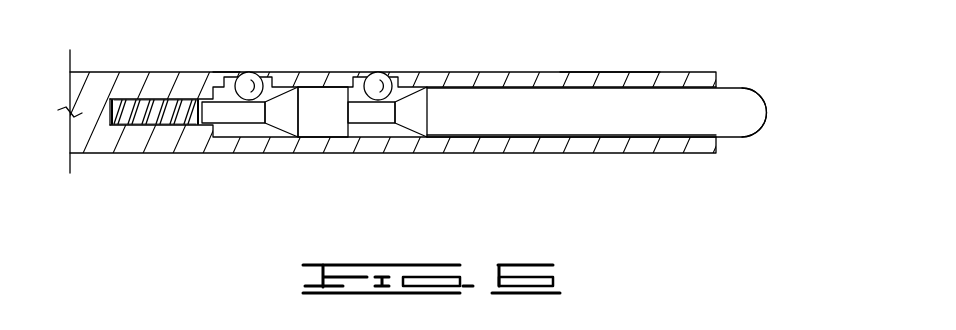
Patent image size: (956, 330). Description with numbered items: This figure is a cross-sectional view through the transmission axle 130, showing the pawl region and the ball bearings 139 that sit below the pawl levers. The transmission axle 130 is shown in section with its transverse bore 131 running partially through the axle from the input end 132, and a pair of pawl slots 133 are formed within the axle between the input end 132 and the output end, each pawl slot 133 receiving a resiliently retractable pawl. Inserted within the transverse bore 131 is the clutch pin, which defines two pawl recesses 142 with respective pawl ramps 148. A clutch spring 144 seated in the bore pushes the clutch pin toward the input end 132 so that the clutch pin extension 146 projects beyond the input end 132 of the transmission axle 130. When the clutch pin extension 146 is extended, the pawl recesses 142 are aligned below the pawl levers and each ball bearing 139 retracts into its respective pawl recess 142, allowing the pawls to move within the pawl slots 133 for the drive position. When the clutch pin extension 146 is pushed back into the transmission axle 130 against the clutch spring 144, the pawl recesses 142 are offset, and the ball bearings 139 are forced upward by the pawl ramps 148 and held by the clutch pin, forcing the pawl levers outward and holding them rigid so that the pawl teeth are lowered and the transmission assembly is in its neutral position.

The transmission axle 130 is at (542, 148).
The transverse bore 131 is at (717, 87).
The input end 132 is at (613, 72).
The pawl slot 133 is at (230, 72).
The ball bearing 139 is at (245, 78).
The pawl recess 142 is at (361, 127).
The clutch spring 144 is at (167, 125).
The clutch pin extension 146 is at (740, 125).
The pawl ramp 148 is at (401, 128).